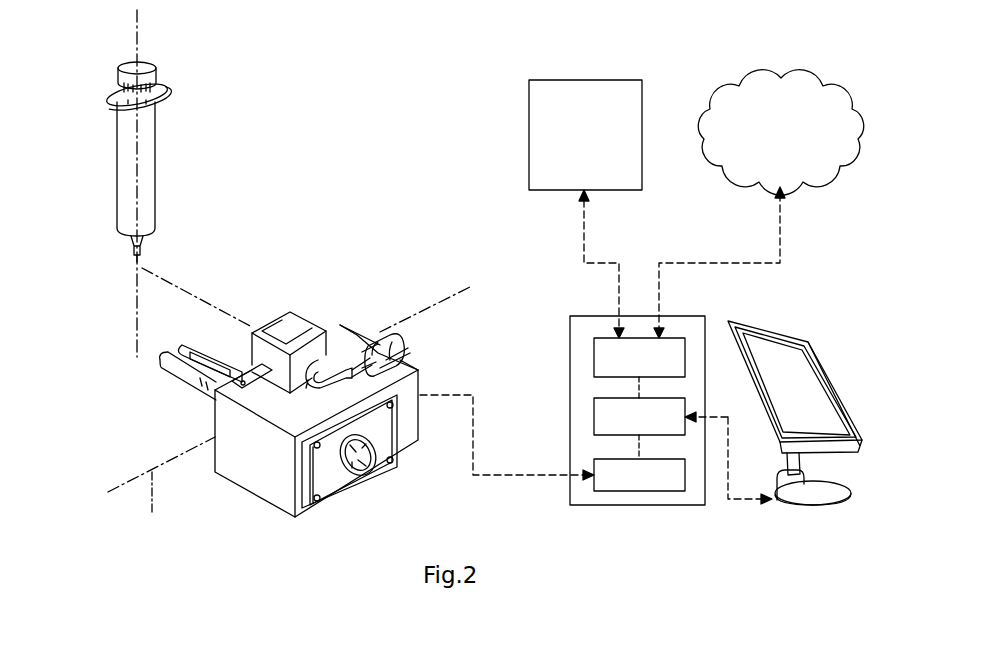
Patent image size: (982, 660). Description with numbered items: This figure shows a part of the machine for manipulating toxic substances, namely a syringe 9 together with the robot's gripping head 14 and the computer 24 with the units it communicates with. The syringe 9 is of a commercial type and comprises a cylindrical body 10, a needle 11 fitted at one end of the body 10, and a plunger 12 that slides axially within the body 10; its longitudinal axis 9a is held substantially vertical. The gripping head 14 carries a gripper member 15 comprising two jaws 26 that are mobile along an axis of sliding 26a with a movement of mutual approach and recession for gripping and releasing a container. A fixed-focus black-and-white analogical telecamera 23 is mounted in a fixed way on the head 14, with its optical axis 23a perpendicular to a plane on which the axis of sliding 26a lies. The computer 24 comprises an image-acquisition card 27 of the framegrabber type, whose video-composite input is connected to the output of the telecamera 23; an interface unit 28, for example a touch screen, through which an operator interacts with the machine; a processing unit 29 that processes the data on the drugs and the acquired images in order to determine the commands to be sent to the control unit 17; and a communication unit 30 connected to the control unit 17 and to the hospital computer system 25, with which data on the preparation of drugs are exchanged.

The syringe 9 is at (135, 181).
The longitudinal axis 9a is at (128, 33).
The body 10 is at (147, 167).
The needle 11 is at (135, 270).
The plunger 12 is at (148, 72).
The gripping head 14 is at (260, 482).
The gripper member 15 is at (186, 401).
The control unit 17 is at (542, 137).
The telecamera 23 is at (303, 325).
The optical axis 23a is at (180, 283).
The computer 24 is at (648, 441).
The hospital computer system 25 is at (740, 100).
The jaws 26 is at (192, 353).
The axis of sliding 26a is at (161, 490).
The image-acquisition card 27 is at (617, 485).
The interface unit 28 is at (812, 382).
The processing unit 29 is at (603, 417).
The communication unit 30 is at (603, 358).